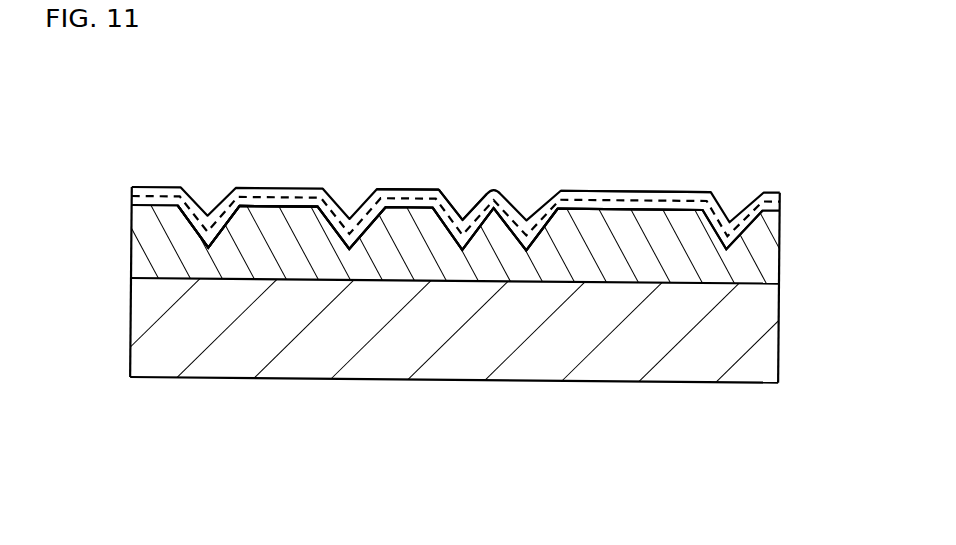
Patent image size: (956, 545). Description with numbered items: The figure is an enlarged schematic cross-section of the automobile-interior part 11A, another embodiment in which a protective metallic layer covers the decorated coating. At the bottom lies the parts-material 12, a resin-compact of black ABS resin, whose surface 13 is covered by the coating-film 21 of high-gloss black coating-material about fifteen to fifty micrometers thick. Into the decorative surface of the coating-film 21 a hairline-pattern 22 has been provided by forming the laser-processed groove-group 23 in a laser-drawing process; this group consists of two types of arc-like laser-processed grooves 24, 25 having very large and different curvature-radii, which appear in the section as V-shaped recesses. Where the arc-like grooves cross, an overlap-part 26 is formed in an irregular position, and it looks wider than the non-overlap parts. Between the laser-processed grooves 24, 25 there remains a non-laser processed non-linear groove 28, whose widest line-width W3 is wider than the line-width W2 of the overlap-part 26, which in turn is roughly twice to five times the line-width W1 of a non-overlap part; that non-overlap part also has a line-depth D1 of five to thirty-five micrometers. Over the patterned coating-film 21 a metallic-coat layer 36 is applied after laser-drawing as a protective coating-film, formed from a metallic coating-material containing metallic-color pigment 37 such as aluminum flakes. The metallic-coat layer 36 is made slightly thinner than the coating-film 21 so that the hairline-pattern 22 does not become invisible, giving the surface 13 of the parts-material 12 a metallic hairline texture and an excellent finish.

The automobile-interior part 11A is at (762, 132).
The parts-material 12 is at (762, 350).
The surface 13 is at (310, 268).
The coating-film 21 is at (765, 246).
The hairline-pattern 22 is at (295, 336).
The laser-processed groove-group 23 is at (702, 416).
The laser-processed groove 24 is at (208, 248).
The laser-processed groove 25 is at (319, 207).
The overlap-part 26 is at (470, 182).
The non-laser processed non-linear groove 28 is at (615, 184).
The metallic-coat layer 36 is at (779, 200).
The metallic-color pigment 37 is at (422, 196).
The line-width W1 is at (177, 187).
The line-width W2 is at (432, 187).
The line-width W3 is at (712, 187).
The line-depth D1 is at (200, 247).